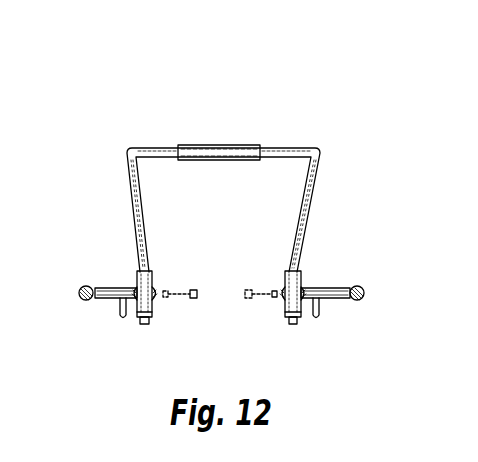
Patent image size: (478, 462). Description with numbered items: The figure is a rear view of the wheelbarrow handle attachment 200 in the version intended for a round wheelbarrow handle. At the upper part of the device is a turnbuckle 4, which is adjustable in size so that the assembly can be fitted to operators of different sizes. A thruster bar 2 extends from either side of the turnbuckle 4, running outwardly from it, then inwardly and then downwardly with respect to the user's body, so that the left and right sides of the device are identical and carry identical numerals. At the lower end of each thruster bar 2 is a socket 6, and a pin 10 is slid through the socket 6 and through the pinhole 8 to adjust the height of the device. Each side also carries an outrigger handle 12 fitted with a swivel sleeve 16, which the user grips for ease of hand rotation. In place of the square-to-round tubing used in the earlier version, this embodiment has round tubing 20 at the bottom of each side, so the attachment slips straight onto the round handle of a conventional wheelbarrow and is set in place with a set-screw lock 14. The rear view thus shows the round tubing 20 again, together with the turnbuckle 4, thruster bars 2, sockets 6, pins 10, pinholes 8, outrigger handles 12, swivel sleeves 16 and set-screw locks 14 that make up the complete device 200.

The handlebar assembly 200 is at (163, 81).
The thruster bar 2 is at (128, 150).
The turnbuckle 4 is at (234, 147).
The round tubing 20 is at (136, 276).
The pinhole 8 is at (156, 297).
The socket 6 is at (156, 318).
The pin 10 is at (188, 295).
The swivel sleeve 16 is at (112, 288).
The outrigger handle 12 is at (86, 301).
The set-screw lock 14 is at (120, 316).